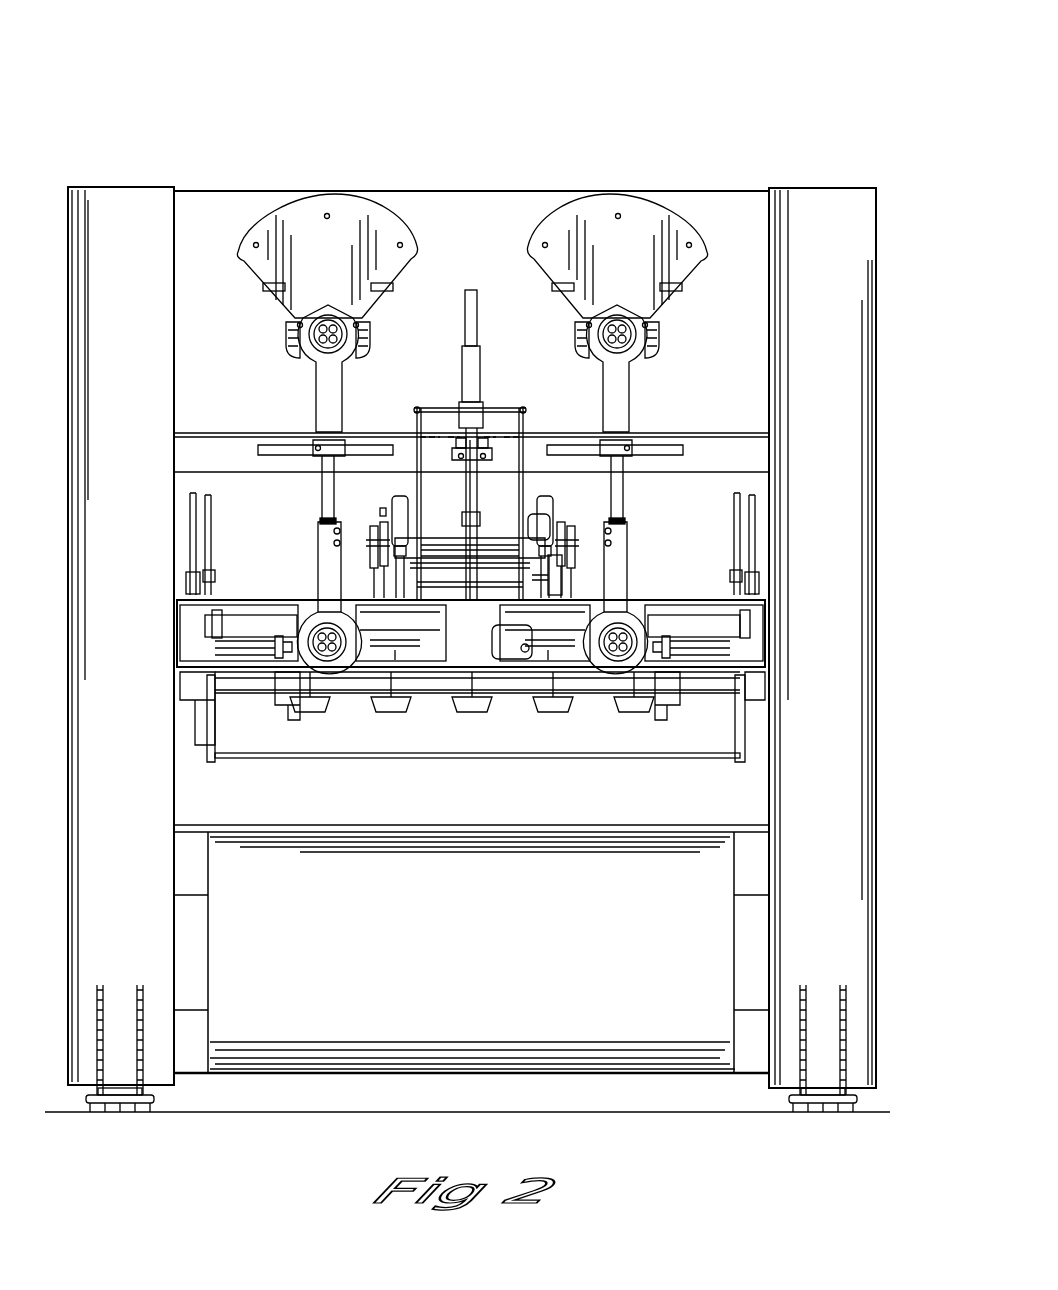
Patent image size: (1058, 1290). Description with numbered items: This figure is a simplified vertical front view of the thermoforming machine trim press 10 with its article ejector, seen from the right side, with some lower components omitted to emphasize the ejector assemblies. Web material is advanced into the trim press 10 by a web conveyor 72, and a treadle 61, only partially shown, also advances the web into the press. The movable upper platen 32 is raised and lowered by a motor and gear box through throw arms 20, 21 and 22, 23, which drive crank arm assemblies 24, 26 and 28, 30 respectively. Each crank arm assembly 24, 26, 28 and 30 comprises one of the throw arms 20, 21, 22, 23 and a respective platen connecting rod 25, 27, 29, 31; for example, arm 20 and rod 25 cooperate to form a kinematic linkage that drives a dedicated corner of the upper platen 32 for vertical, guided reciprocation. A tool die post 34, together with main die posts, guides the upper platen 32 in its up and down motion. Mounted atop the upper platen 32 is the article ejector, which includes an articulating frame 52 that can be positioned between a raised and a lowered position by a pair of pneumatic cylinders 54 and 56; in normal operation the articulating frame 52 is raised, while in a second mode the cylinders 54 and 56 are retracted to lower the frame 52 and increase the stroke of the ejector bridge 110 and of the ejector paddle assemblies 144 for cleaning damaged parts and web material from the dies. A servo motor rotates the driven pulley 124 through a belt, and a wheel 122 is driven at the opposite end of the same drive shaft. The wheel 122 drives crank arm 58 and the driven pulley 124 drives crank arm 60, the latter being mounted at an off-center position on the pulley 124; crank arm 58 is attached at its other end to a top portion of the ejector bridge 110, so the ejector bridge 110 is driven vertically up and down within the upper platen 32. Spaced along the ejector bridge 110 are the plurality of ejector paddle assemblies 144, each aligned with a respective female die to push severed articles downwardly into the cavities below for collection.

The thermoforming machine trim press 10 is at (618, 114).
The web conveyor 72 is at (118, 187).
The throw arm 20 is at (304, 256).
The throw arm 22 is at (304, 308).
The throw arm 21 is at (636, 260).
The throw arm 23 is at (641, 308).
The crank arm assembly 24 is at (276, 368).
The crank arm assembly 28 is at (295, 369).
The platen connecting rod 25 is at (289, 457).
The platen connecting rod 29 is at (318, 414).
The crank arm assembly 26 is at (671, 368).
The crank arm assembly 30 is at (676, 356).
The platen connecting rod 27 is at (651, 460).
The platen connecting rod 31 is at (626, 416).
The tool die post 34 is at (466, 320).
The treadle 61 is at (430, 398).
The pneumatic cylinder 56 is at (401, 497).
The articulating frame 52 is at (385, 522).
The pneumatic cylinder 54 is at (543, 497).
The wheel 122 is at (560, 522).
The crank arm 58 is at (566, 578).
The driven pulley 124 is at (378, 548).
The crank arm 60 is at (372, 571).
The upper platen 32 is at (262, 598).
The ejector bridge 110 is at (687, 614).
The ejector paddle assembly 144 is at (308, 716).